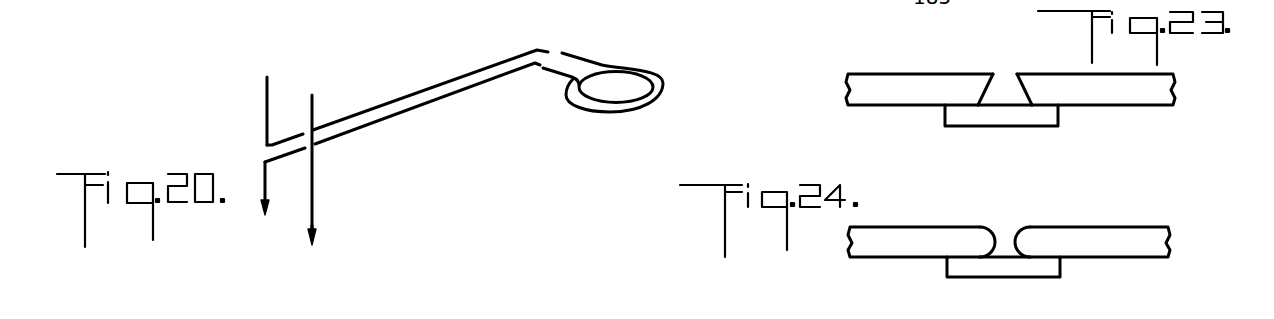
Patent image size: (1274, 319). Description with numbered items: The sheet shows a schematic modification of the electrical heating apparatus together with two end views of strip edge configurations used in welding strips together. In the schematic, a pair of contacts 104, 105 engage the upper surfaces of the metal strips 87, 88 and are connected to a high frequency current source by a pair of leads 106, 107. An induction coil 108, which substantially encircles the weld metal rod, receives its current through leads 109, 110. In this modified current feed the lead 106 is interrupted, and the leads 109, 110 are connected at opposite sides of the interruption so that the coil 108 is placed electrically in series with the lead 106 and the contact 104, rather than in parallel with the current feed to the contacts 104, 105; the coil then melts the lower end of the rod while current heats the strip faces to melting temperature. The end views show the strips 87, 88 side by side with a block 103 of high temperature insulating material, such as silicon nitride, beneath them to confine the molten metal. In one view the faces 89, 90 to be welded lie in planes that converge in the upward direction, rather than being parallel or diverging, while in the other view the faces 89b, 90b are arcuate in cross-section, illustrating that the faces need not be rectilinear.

In FIG. 23, the metal strip 87 is at (893, 80).
In FIG. 24, the metal strip 87 is at (904, 238).
In FIG. 23, the metal strip 88 is at (1062, 80).
In FIG. 24, the metal strip 88 is at (1113, 238).
In FIG. 23, the face 89 is at (1000, 80).
In FIG. 23, the face 90 is at (1012, 78).
In FIG. 24, the face 89b is at (988, 232).
In FIG. 24, the face 90b is at (1017, 235).
In FIG. 23, the block 103 is at (957, 117).
In FIG. 24, the block 103 is at (953, 268).
In FIG. 20, the contact 104 is at (265, 209).
In FIG. 20, the contact 105 is at (316, 237).
In FIG. 20, the lead 106 is at (267, 99).
In FIG. 20, the lead 107 is at (317, 102).
In FIG. 20, the induction coil 108 is at (663, 82).
In FIG. 20, the lead 109 is at (453, 80).
In FIG. 20, the lead 110 is at (458, 92).